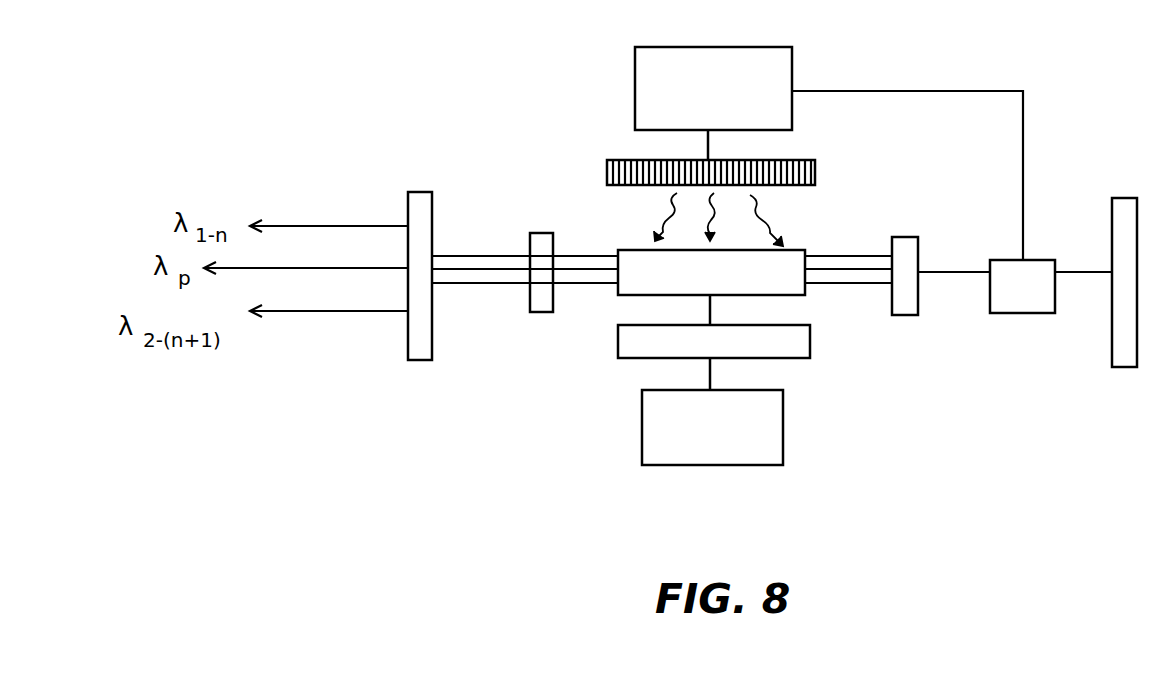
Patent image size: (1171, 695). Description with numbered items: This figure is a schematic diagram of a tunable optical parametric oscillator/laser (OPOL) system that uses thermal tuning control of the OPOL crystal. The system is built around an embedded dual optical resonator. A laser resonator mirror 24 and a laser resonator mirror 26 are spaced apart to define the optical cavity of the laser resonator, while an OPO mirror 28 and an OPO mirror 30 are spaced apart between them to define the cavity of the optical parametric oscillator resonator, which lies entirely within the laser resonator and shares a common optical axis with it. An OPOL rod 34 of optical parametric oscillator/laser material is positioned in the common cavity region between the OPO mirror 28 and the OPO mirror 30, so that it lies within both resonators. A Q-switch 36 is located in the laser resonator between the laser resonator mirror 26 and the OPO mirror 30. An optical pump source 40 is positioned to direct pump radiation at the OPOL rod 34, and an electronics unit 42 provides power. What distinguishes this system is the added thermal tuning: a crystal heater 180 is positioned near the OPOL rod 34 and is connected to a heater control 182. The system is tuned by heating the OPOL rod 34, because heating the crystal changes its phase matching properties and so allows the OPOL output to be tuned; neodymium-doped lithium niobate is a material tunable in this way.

The laser resonator mirror 24 is at (425, 192).
The laser resonator mirror 26 is at (1125, 198).
The OPO mirror 28 is at (547, 233).
The OPO mirror 30 is at (905, 237).
The OPOL rod 34 is at (790, 250).
The Q-switch 36 is at (1027, 313).
The optical pump source 40 is at (613, 160).
The electronics unit 42 is at (635, 73).
The crystal heater 180 is at (810, 343).
The heater control 182 is at (783, 430).